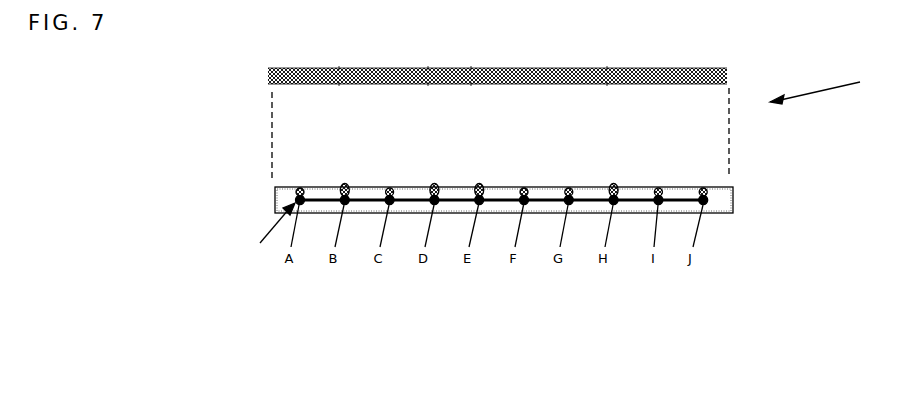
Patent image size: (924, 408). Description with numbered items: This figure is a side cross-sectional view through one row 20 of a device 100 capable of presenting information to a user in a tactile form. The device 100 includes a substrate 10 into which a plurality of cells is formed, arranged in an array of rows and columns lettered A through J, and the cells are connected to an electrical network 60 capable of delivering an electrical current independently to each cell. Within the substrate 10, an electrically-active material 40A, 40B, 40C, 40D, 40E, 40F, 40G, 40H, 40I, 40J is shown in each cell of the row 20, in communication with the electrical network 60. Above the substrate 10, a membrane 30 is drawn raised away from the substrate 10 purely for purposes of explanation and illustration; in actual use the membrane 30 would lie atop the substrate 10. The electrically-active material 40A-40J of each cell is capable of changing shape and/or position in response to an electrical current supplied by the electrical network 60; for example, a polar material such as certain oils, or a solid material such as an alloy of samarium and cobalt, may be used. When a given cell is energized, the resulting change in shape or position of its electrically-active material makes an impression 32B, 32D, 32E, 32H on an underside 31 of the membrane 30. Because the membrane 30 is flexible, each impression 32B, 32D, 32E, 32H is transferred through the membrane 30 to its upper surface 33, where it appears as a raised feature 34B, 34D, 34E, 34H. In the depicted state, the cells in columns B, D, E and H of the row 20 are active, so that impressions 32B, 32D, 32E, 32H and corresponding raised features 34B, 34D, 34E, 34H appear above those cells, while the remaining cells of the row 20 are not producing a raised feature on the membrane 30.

The device 100 is at (832, 86).
The substrate 10 is at (722, 205).
The row 20 is at (322, 205).
The membrane 30 is at (681, 68).
The underside 31 is at (291, 83).
The surface 33 is at (289, 69).
The raised feature 34B is at (339, 68).
The raised feature 34D is at (428, 68).
The raised feature 34E is at (471, 68).
The raised feature 34H is at (607, 68).
The impression 32B is at (339, 84).
The impression 32D is at (428, 84).
The impression 32E is at (471, 84).
The impression 32H is at (607, 84).
The electrically-active material 40A is at (300, 188).
The electrically-active material 40B is at (345, 184).
The electrically-active material 40C is at (390, 188).
The electrically-active material 40D is at (434, 184).
The electrically-active material 40E is at (480, 184).
The electrically-active material 40F is at (524, 188).
The electrically-active material 40G is at (569, 188).
The electrically-active material 40H is at (614, 184).
The electrically-active material 40I is at (659, 188).
The electrically-active material 40J is at (704, 188).
The electrical network 60 is at (266, 234).